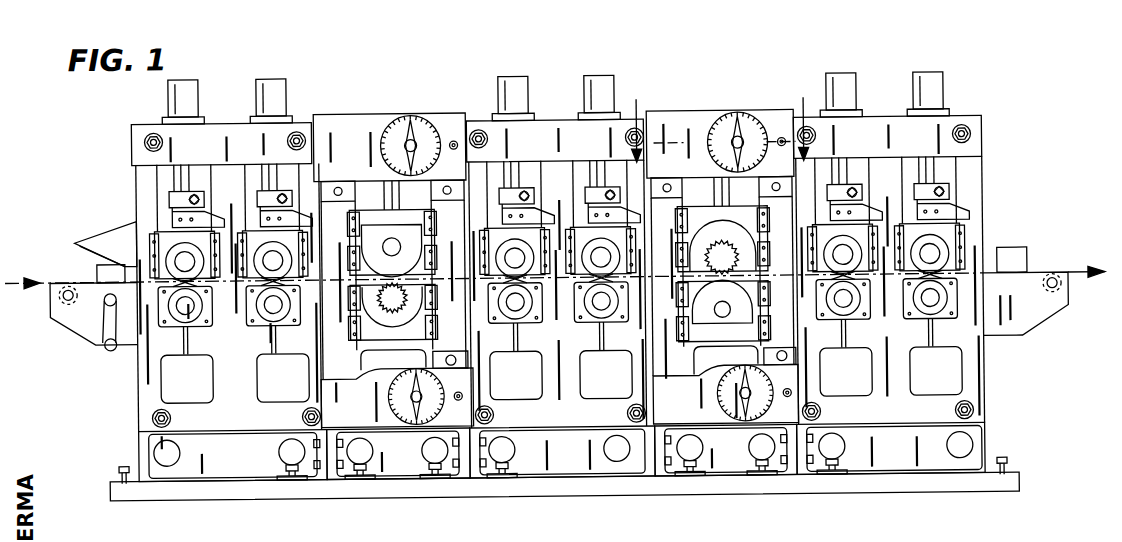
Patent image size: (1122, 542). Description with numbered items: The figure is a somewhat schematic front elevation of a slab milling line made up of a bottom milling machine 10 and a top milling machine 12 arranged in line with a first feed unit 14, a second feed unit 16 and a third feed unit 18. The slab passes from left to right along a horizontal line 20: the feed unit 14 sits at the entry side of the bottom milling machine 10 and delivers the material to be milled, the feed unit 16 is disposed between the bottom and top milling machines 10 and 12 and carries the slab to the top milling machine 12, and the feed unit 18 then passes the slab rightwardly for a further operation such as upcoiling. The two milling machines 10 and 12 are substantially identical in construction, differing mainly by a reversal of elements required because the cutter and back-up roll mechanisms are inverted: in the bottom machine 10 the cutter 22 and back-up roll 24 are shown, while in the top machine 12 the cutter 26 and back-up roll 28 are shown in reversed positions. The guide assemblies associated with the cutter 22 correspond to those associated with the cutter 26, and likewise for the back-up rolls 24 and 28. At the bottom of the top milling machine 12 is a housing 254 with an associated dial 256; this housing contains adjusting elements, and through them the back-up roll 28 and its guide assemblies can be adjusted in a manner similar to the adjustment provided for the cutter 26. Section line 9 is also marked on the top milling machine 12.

The section line 9- 9 is at (719, 117).
The bottom milling machine 10 is at (394, 264).
The top milling machine 12 is at (723, 260).
The first feed unit 14 is at (216, 91).
The second feed unit 16 is at (554, 78).
The third feed unit 18 is at (880, 84).
The horizontal line 20 is at (22, 278).
The cutter 22 is at (392, 304).
The back-up roll 24 is at (391, 251).
The cutter 26 is at (722, 247).
The back-up roll 28 is at (722, 301).
The housing 254 is at (650, 392).
The dial 256 is at (718, 400).